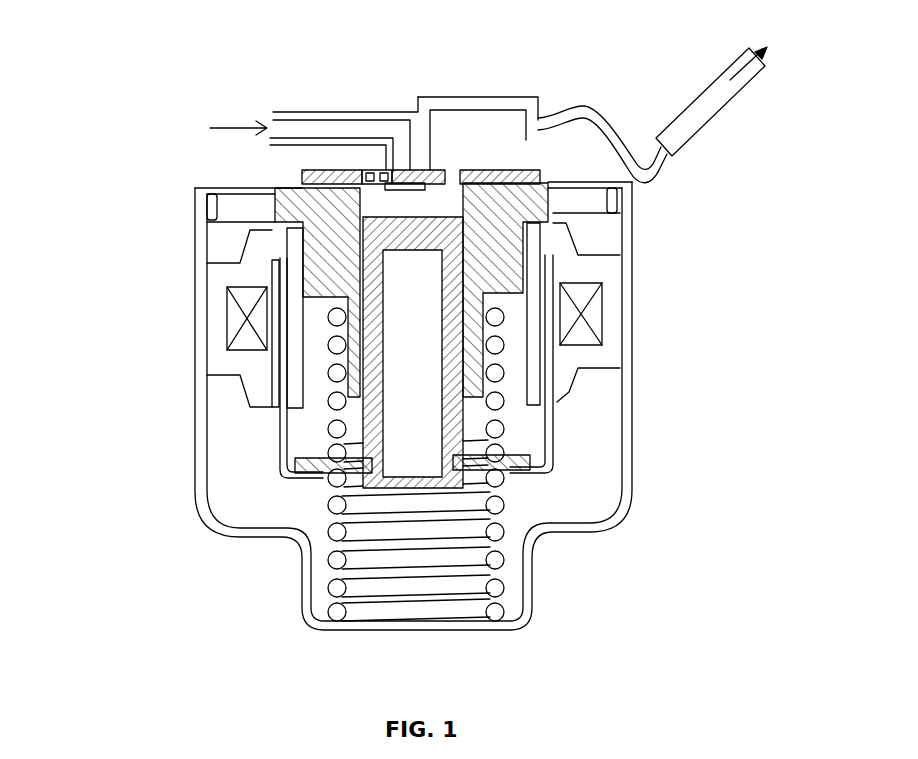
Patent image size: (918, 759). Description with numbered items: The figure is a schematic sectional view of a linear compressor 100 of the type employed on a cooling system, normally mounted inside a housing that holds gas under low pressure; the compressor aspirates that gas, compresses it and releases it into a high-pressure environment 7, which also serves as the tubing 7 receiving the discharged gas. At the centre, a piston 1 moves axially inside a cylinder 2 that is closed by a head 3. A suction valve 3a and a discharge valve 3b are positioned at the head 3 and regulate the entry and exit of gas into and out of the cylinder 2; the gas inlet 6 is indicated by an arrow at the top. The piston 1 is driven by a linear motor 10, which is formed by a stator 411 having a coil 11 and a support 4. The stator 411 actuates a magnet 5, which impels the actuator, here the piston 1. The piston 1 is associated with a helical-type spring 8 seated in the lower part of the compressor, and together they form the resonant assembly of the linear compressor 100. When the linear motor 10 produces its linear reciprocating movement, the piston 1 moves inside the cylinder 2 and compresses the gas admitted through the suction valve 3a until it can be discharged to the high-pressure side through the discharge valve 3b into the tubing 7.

The linear compressor 100 is at (150, 243).
The piston 1 is at (412, 240).
The cylinder 2 is at (500, 258).
The head 3 is at (534, 165).
The suction valve 3a is at (406, 181).
The discharge valve 3b is at (448, 167).
The support 4 is at (224, 358).
The stator 411 is at (255, 270).
The magnet 5 is at (283, 313).
The inlet 6 is at (255, 165).
The high-pressure environment 7 is at (504, 149).
The helical-type spring 8 is at (503, 516).
The linear motor 10 is at (197, 331).
The coil 11 is at (584, 324).